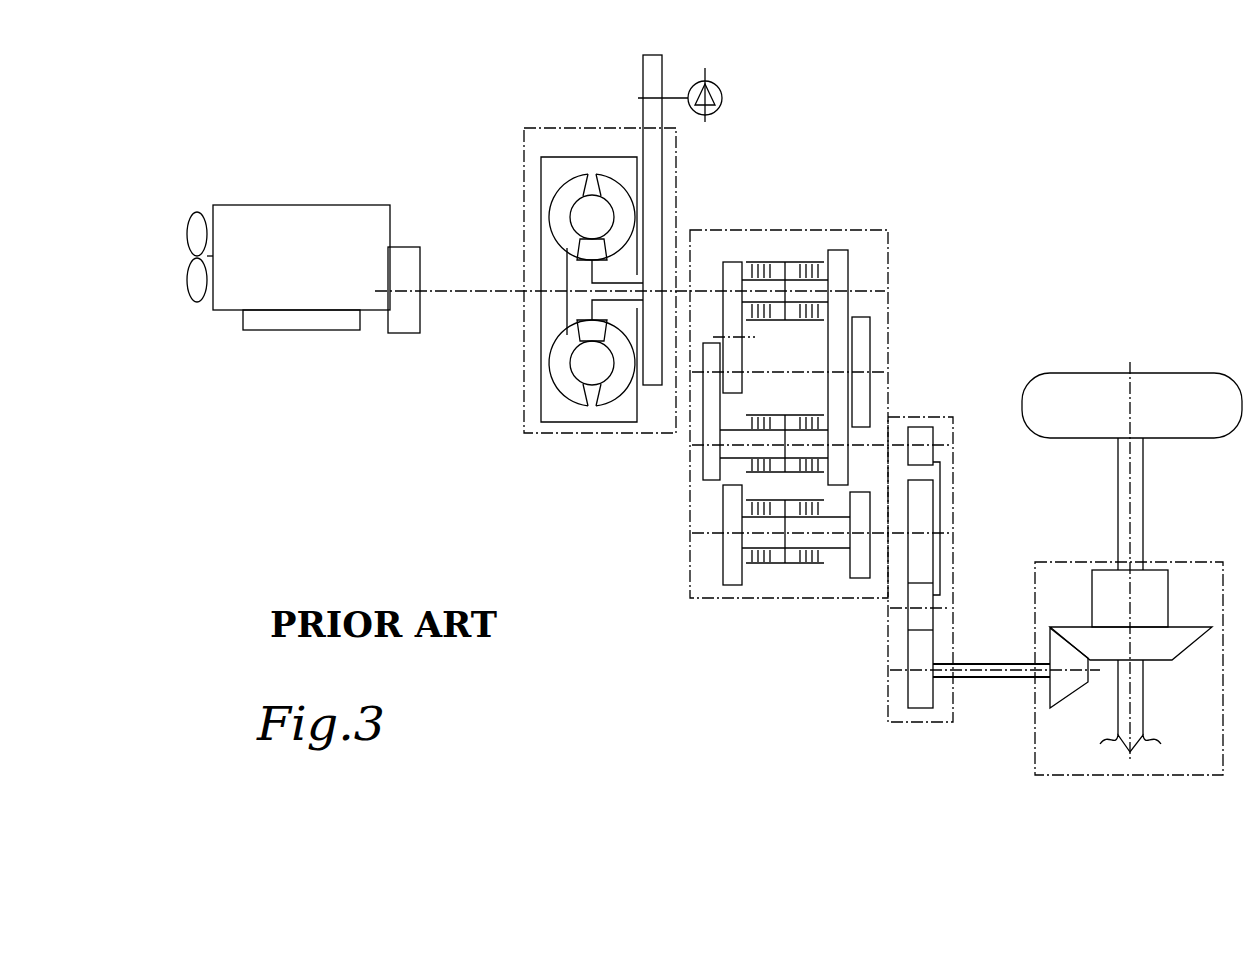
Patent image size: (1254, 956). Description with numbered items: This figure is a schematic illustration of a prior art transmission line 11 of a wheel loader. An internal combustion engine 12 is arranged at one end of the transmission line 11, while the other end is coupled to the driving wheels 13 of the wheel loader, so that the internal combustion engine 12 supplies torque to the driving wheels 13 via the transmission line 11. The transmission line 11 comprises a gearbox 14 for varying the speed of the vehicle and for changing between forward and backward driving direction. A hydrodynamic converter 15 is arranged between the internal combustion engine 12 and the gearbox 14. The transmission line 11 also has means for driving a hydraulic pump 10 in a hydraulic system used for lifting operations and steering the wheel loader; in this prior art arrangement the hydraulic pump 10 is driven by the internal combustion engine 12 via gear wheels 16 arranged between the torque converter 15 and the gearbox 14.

The hydraulic pump 10 is at (722, 91).
The transmission line 11 is at (862, 190).
The internal combustion engine 12 is at (238, 227).
The driving wheels 13 is at (1068, 393).
The gearbox 14 is at (878, 250).
The hydrodynamic converter 15 is at (558, 415).
The gear wheels 16 is at (655, 185).